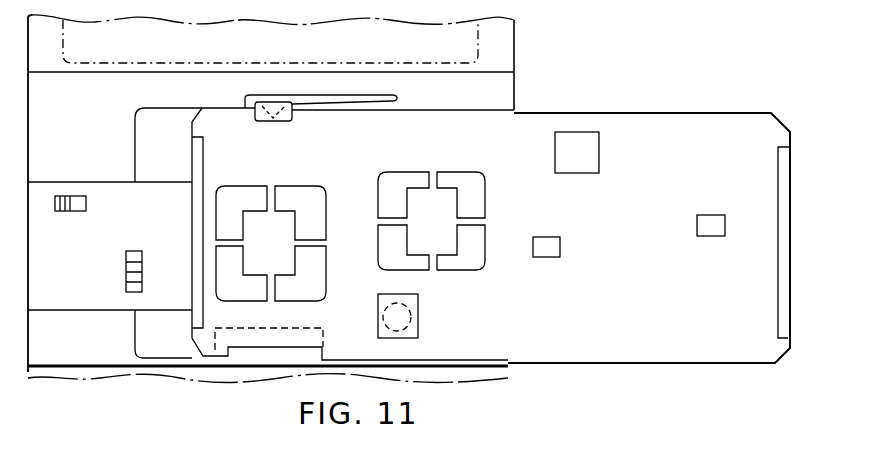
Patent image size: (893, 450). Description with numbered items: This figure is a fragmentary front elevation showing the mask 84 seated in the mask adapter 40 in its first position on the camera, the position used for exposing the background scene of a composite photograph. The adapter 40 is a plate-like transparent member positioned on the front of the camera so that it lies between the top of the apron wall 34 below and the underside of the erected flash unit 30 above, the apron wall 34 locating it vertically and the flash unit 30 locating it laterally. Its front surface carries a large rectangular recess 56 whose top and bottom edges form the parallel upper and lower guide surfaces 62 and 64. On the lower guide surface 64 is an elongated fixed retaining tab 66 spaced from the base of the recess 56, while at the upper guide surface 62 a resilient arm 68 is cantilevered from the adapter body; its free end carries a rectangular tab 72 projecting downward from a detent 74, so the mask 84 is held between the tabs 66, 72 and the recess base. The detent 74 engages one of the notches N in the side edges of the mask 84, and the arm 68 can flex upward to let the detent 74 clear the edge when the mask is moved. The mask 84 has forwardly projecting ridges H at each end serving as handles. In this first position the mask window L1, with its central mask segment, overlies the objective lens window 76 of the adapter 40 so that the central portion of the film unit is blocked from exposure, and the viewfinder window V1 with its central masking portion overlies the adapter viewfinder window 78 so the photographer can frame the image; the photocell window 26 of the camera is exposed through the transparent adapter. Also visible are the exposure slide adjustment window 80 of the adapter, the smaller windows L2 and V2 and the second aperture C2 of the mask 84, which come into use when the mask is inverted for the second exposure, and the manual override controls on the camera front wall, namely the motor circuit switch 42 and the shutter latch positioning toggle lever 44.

The flash unit 30 is at (516, 33).
The mask adapter 40 is at (517, 85).
The mask 84 is at (703, 162).
The ridges H is at (777, 171).
The upper guide surface 62 is at (180, 94).
The rectangular recess 56 is at (144, 132).
The tab 72 is at (217, 225).
The resilient arm 68 is at (361, 103).
The detent 74 is at (275, 118).
The objective lens window 76 is at (312, 186).
The viewfinder lens window 78 is at (424, 173).
The window L1 is at (281, 173).
The viewfinder window V1 is at (478, 190).
The second aperture C2 is at (588, 170).
The window V2 is at (545, 256).
The window L2 is at (712, 236).
The photocell window 26 is at (418, 312).
The motor circuit switch 42 is at (62, 211).
The shutter latch positioning toggle lever 44 is at (134, 252).
The apron wall 34 is at (460, 377).
The exposure slide adjustment window 80 is at (262, 334).
The lower guide surface 64 is at (174, 357).
The retaining tab 66 is at (286, 347).
The notches N is at (706, 364).